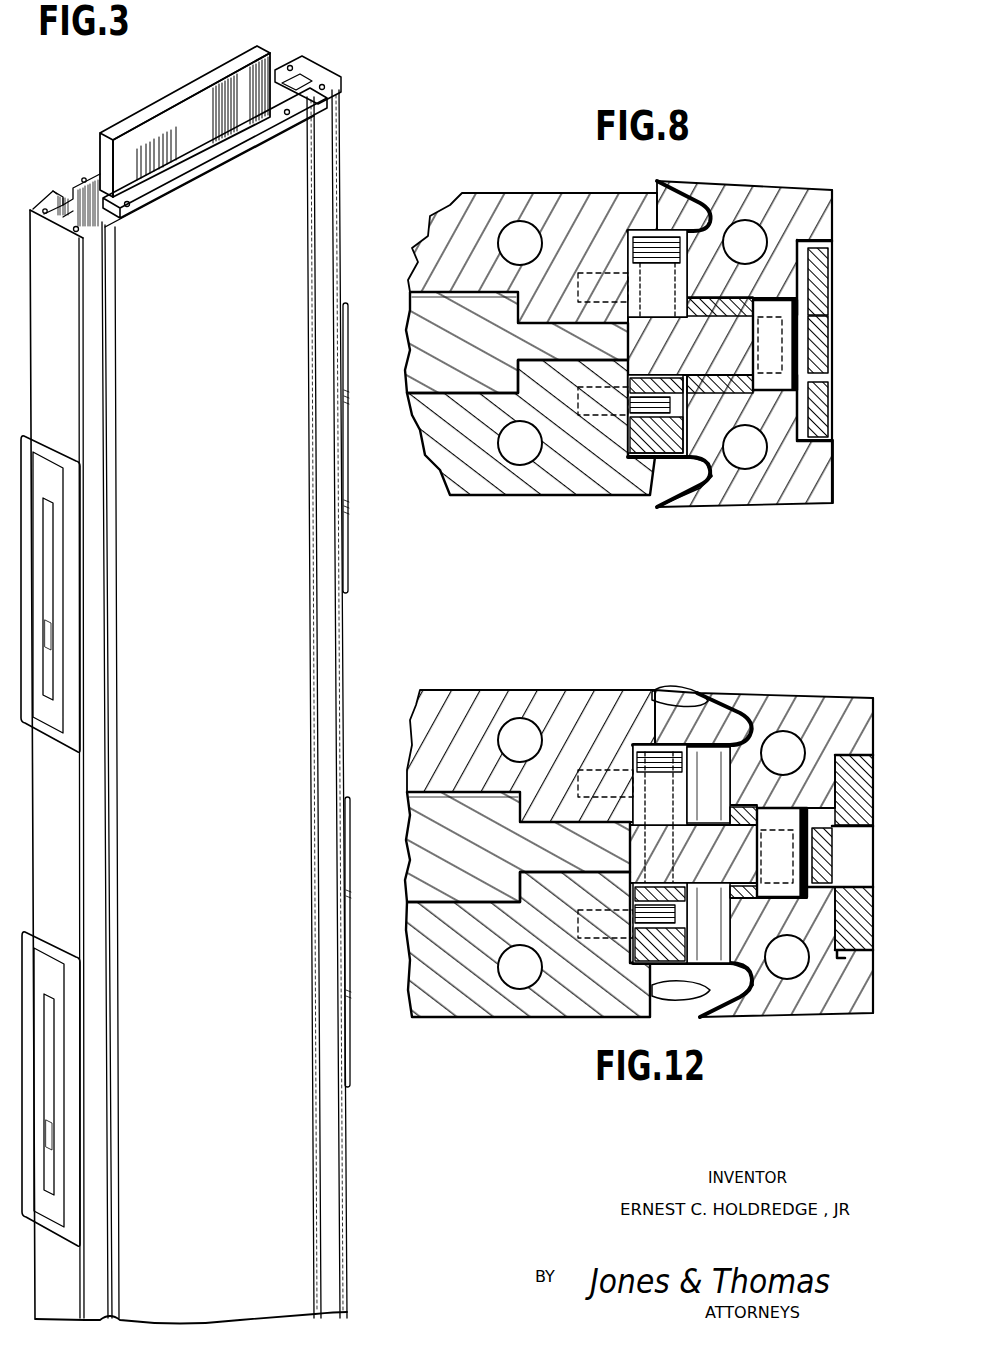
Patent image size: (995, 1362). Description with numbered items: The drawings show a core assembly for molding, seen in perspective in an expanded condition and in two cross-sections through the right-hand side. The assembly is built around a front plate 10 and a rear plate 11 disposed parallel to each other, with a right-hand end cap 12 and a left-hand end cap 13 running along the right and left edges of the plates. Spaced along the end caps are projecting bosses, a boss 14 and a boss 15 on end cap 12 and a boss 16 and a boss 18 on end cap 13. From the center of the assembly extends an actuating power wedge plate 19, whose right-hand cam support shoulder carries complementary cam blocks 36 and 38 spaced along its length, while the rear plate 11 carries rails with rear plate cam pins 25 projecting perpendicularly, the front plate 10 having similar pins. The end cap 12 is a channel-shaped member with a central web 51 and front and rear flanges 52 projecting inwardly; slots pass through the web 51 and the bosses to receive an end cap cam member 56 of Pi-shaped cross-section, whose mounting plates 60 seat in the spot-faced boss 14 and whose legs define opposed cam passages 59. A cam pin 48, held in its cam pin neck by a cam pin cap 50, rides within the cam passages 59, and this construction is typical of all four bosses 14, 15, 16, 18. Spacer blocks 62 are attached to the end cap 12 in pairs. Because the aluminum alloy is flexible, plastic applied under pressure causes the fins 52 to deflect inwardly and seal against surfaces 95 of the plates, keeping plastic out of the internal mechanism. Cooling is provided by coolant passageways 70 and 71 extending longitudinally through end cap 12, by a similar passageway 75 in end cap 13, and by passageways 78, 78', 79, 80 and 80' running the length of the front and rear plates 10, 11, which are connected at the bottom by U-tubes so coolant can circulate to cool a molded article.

In FIG. 3, the front plate 10 is at (226, 545).
In FIG. 8, the front plate 10 is at (563, 498).
In FIG. 12, the front plate 10 is at (493, 1017).
In FIG. 3, the rear plate 11 is at (63, 190).
In FIG. 8, the rear plate 11 is at (583, 193).
In FIG. 12, the rear plate 11 is at (547, 688).
In FIG. 3, the right-hand end cap 12 is at (338, 79).
In FIG. 8, the right-hand end cap 12 is at (818, 510).
In FIG. 12, the right-hand end cap 12 is at (830, 687).
In FIG. 3, the left-hand end cap 13 is at (14, 228).
In FIG. 3, the projecting boss 14 is at (347, 313).
In FIG. 8, the projecting boss 14 is at (824, 185).
In FIG. 3, the projecting boss 15 is at (347, 1067).
In FIG. 3, the projecting boss 16 is at (77, 507).
In FIG. 3, the projecting boss 18 is at (75, 981).
In FIG. 3, the actuating power wedge plate 19 is at (167, 98).
In FIG. 8, the actuating power wedge plate 19 is at (410, 380).
In FIG. 12, the actuating power wedge plate 19 is at (417, 870).
In FIG. 12, the rear plate cam pin 25 is at (631, 770).
In FIG. 8, the cam block 36 is at (645, 235).
In FIG. 12, the cam block 36 is at (653, 757).
In FIG. 8, the cam block 38 is at (653, 490).
In FIG. 12, the cam block 38 is at (690, 983).
In FIG. 12, the cam pin 48 is at (773, 900).
In FIG. 8, the cam pin cap 50 is at (833, 327).
In FIG. 12, the cam pin cap 50 is at (843, 842).
In FIG. 12, the central web 51 is at (793, 785).
In FIG. 8, the front and rear flanges 52 is at (661, 180).
In FIG. 12, the front and rear flanges 52 is at (698, 690).
In FIG. 8, the end cap cam member 56 is at (833, 383).
In FIG. 12, the end cap cam member 56 is at (847, 958).
In FIG. 12, the cam passage 59 is at (763, 808).
In FIG. 8, the mounting plate 60 is at (833, 263).
In FIG. 12, the mounting plate 60 is at (840, 958).
In FIG. 12, the spacer block 62 is at (703, 757).
In FIG. 3, the coolant passageway 70 is at (291, 66).
In FIG. 8, the coolant passageway 70 is at (746, 232).
In FIG. 12, the coolant passageway 70 is at (785, 745).
In FIG. 3, the coolant passageway 71 is at (338, 88).
In FIG. 8, the coolant passageway 71 is at (744, 462).
In FIG. 12, the coolant passageway 71 is at (790, 968).
In FIG. 3, the coolant passageway 75 is at (78, 231).
In FIG. 3, the coolant passageway 78 is at (158, 214).
In FIG. 3, the coolant passageway 78' is at (79, 150).
In FIG. 3, the coolant passageway 79 is at (208, 162).
In FIG. 3, the coolant passageway 80 is at (279, 137).
In FIG. 8, the coolant passageway 80 is at (508, 474).
In FIG. 12, the coolant passageway 80 is at (526, 999).
In FIG. 8, the coolant passageway 80' is at (519, 209).
In FIG. 12, the coolant passageway 80' is at (499, 708).
In FIG. 12, the sealing surface 95 is at (697, 693).